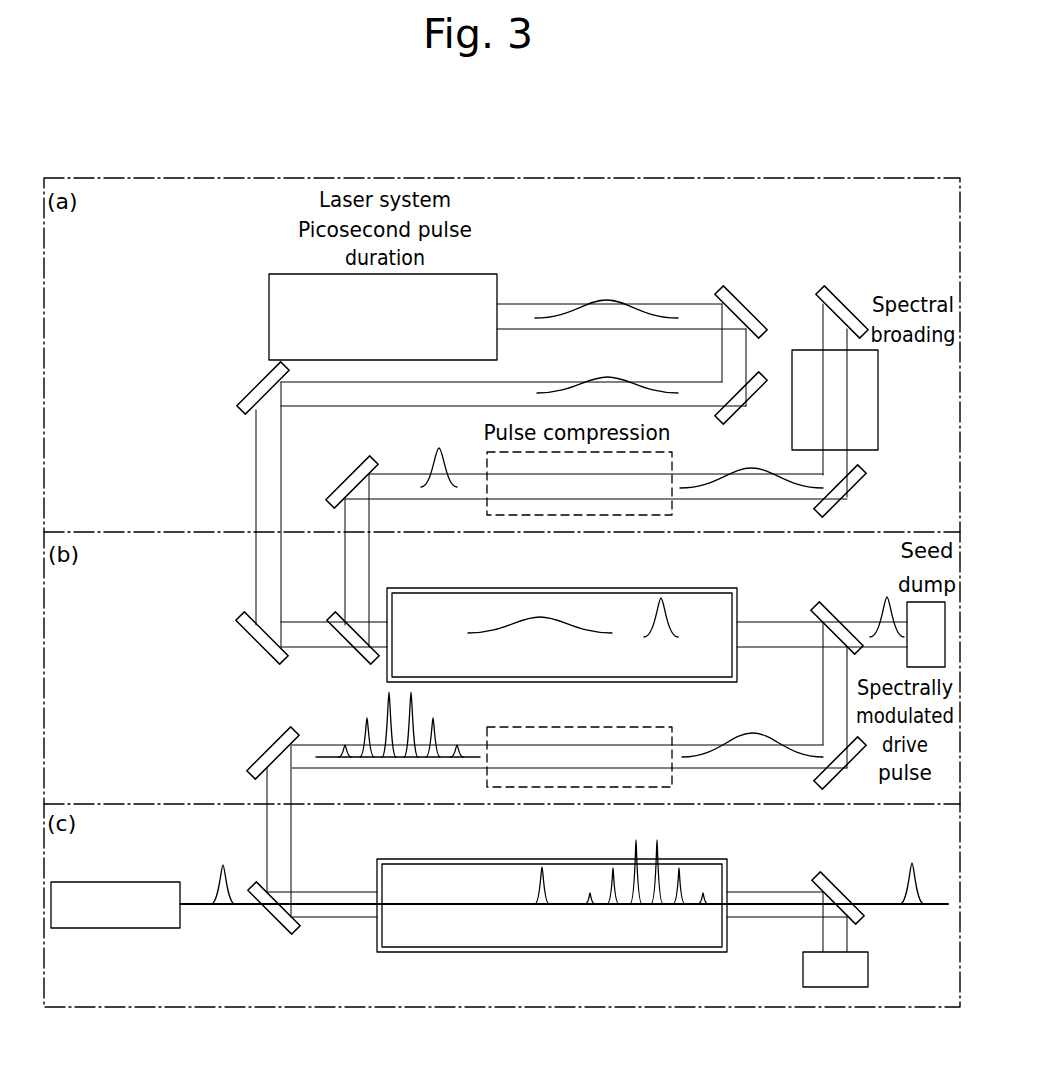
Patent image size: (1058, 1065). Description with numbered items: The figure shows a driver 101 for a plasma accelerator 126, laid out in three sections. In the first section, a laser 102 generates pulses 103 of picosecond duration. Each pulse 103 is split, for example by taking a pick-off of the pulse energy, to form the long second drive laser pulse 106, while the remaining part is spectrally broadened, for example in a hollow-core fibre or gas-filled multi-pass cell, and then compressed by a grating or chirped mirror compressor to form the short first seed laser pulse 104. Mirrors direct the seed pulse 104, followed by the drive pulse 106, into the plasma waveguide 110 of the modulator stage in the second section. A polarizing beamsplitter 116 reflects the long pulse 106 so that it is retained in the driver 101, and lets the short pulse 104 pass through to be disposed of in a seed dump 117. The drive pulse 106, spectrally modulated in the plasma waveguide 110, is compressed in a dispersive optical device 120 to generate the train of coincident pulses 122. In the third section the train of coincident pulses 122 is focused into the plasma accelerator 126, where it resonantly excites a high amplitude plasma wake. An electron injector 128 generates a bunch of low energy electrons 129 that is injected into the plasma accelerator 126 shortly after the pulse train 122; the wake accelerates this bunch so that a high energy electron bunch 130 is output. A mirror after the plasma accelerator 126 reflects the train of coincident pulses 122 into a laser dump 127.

The driver 101 is at (164, 116).
The laser 102 is at (269, 316).
The pulse 103 is at (623, 303).
The seed laser pulse 104 is at (432, 460).
The drive laser pulse 106 is at (650, 395).
The plasma waveguide 110 is at (698, 607).
The polarizing beamsplitter 116 is at (817, 602).
The seed dump 117 is at (907, 603).
The dispersive optical device 120 is at (672, 728).
The train of coincident pulses 122 is at (362, 730).
The plasma accelerator 126 is at (537, 935).
The laser dump 127 is at (803, 972).
The electron injector 128 is at (83, 929).
The bunch of low energy electrons 129 is at (232, 866).
The high energy electron bunch 130 is at (906, 896).